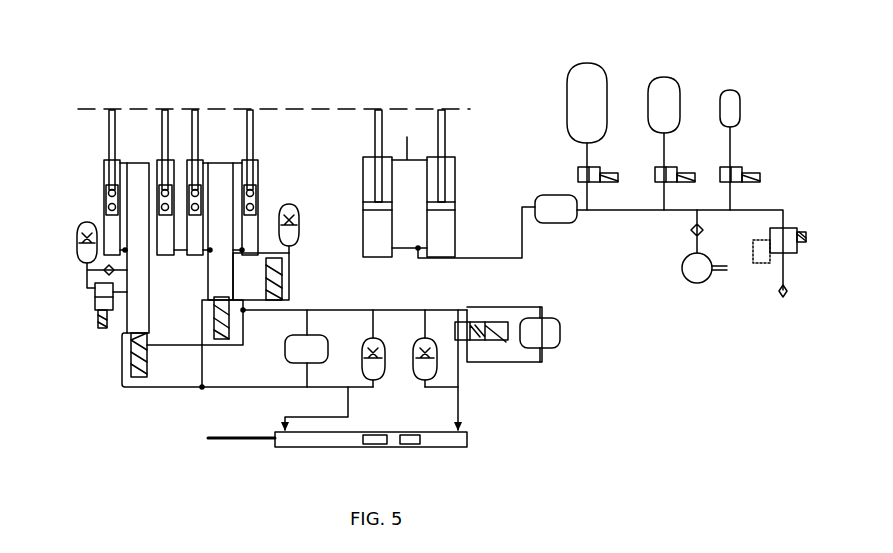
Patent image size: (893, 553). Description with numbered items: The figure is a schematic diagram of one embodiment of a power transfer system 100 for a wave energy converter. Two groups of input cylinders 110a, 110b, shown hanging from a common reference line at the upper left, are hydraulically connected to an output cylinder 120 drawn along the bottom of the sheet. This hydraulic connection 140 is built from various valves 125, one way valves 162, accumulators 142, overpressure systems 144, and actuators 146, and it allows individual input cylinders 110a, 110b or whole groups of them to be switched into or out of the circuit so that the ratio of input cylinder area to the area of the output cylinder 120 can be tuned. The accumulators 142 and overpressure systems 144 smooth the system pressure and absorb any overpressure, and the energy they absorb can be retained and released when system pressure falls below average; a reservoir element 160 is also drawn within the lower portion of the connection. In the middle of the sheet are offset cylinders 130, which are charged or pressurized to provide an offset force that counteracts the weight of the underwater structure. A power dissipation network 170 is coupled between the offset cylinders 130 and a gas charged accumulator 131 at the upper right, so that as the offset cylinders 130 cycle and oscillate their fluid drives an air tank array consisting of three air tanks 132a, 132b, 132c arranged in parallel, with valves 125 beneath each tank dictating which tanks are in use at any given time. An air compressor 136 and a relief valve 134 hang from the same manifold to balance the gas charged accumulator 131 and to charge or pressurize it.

The power transfer system 100 is at (158, 50).
The input cylinders 110a is at (117, 163).
The input cylinders 110b is at (198, 180).
The output cylinder 120 is at (467, 440).
The valves 125 is at (97, 303).
The offset cylinders 130 is at (388, 160).
The gas charged accumulator 131 is at (603, 51).
The air tank 132a is at (732, 112).
The air tank 132b is at (673, 88).
The air tank 132c is at (597, 80).
The relief valve 134 is at (787, 230).
The air compressor 136 is at (700, 275).
The hydraulic connection 140 is at (102, 405).
The accumulators 142 is at (82, 227).
The overpressure systems 144 is at (374, 340).
The actuators 146 is at (473, 327).
The reservoir 160 is at (312, 337).
The one way valves 162 is at (272, 300).
The power dissipation network 170 is at (565, 218).